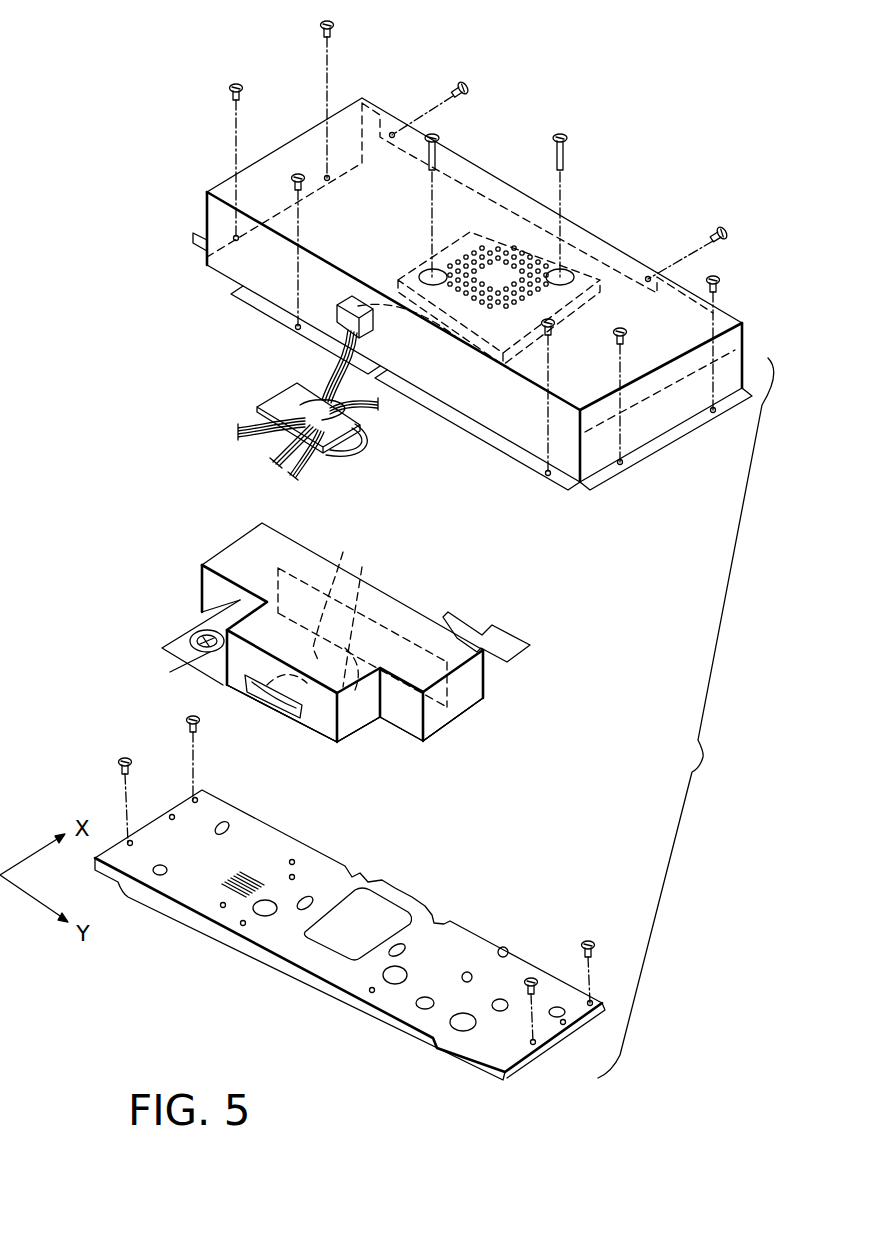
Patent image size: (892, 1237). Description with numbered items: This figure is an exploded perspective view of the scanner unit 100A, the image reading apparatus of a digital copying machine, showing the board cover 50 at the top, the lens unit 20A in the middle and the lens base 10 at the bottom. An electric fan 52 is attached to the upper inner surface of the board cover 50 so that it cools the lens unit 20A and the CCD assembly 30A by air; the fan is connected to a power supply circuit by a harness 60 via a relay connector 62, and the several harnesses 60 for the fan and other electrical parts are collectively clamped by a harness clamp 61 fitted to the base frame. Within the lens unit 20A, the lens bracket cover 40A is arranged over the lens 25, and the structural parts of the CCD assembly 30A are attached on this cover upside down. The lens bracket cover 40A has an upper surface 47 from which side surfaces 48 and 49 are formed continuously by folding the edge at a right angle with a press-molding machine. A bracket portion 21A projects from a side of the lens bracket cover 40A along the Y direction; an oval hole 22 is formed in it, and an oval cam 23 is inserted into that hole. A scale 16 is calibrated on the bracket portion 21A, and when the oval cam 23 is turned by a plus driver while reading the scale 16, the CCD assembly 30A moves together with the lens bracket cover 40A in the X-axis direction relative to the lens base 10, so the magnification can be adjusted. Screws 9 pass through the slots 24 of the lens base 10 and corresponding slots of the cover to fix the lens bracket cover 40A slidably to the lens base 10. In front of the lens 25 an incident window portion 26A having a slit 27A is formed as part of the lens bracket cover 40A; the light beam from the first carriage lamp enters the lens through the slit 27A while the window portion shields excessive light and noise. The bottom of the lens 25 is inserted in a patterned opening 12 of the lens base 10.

The screw 9 is at (244, 88).
The lens base 10 is at (553, 1037).
The patterned opening 12 is at (357, 937).
The scale 16 is at (233, 880).
The lens unit 20A is at (152, 574).
The bracket portion 21A is at (193, 624).
The oval hole 22 is at (173, 671).
The oval cam 23 is at (188, 634).
The slot 24 is at (308, 897).
The lens 25 is at (312, 610).
The incident window portion 26A is at (312, 708).
The slit 27A is at (243, 693).
The CCD assembly 30A is at (364, 572).
The lens bracket cover 40A is at (433, 790).
The upper surface 47 is at (467, 660).
The side surface 48 is at (463, 707).
The side surface 49 is at (360, 718).
The board cover 50 is at (675, 420).
The electric fan 52 is at (505, 232).
The harness 60 is at (247, 423).
The harness clamp 61 is at (345, 437).
The relay connector 62 is at (330, 333).
The scanner unit 100A is at (686, 718).